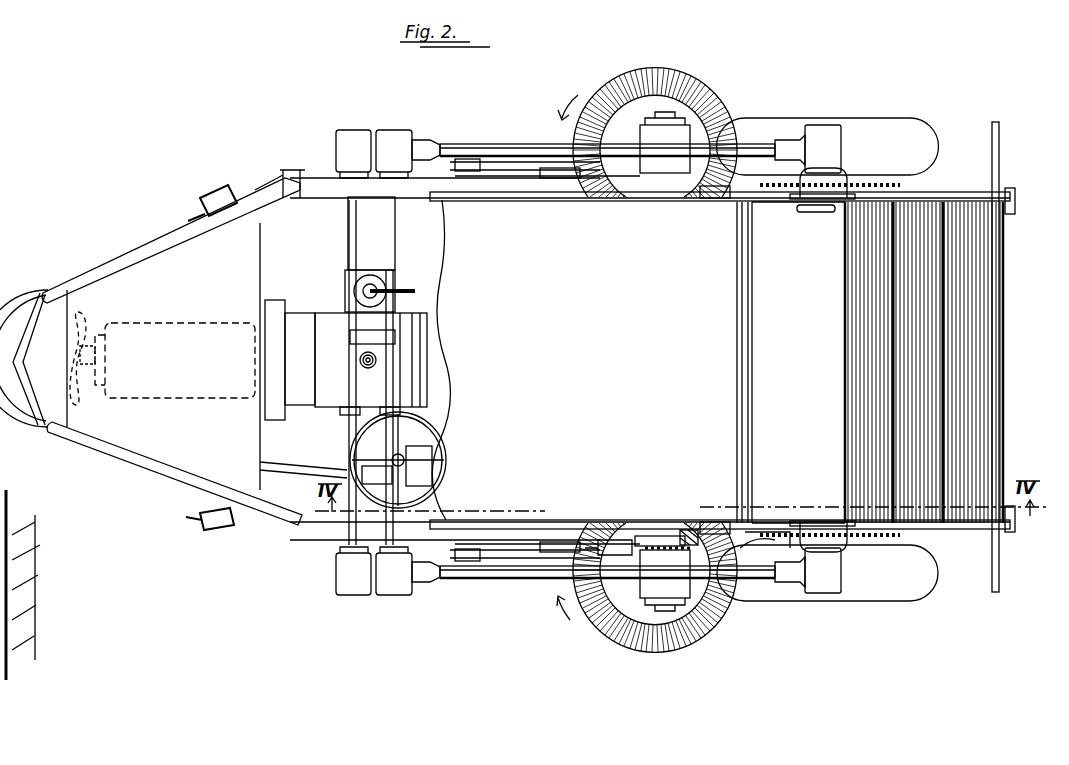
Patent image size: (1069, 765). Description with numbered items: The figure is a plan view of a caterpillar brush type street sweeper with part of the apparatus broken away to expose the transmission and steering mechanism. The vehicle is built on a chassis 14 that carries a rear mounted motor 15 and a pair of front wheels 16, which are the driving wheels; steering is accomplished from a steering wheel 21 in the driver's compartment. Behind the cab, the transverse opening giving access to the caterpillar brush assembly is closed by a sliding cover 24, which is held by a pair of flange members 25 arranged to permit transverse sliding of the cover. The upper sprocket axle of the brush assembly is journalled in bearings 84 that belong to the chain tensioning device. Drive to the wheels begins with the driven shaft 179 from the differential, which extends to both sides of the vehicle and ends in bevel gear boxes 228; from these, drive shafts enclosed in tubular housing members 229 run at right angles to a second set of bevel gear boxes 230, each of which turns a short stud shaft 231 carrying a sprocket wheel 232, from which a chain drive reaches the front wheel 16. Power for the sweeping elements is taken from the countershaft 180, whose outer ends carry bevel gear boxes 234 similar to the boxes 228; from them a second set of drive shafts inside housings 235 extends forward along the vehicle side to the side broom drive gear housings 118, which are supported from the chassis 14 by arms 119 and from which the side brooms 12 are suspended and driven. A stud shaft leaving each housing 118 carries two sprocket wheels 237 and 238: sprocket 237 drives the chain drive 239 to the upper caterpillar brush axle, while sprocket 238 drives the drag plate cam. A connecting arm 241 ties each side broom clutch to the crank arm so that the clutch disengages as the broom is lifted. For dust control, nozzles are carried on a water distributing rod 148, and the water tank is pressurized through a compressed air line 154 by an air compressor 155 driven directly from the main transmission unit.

The side broom 12 is at (712, 110).
The chassis 14 is at (185, 478).
The motor 15 is at (158, 340).
The front wheel 16 is at (905, 128).
The steering wheel 21 is at (430, 440).
The sliding cover 24 is at (787, 355).
The flange member 25 is at (738, 305).
The bearing 84 is at (715, 200).
The side broom drive gear housing 118 is at (668, 135).
The arm 119 is at (645, 538).
The water distributing rod 148 is at (1000, 565).
The compressed air line 154 is at (400, 287).
The air compressor 155 is at (354, 290).
The driven shaft 179 is at (395, 243).
The countershaft 180 is at (349, 237).
The bevel gear box 228 is at (397, 143).
The tubular housing member 229 is at (478, 143).
The bevel gear box 230 is at (822, 138).
The stud shaft 231 is at (812, 203).
The sprocket wheel 232 is at (848, 170).
The bevel gear box 234 is at (355, 142).
The housing 235 is at (512, 138).
The sprocket wheel 237 is at (657, 546).
The sprocket wheel 238 is at (686, 533).
The chain drive 239 is at (748, 545).
The connecting arm 241 is at (618, 545).